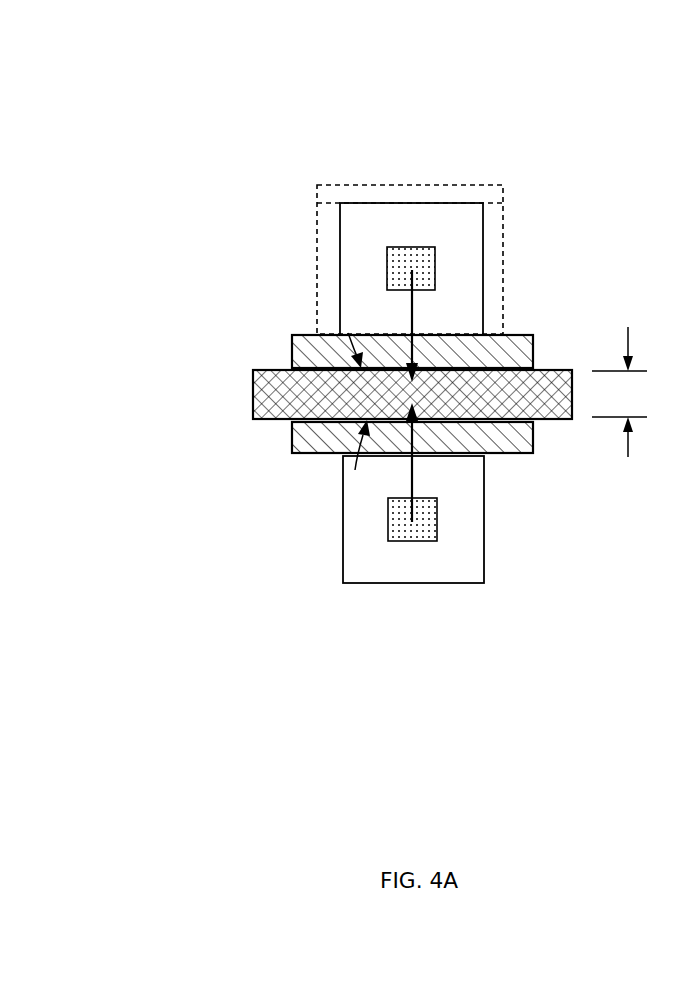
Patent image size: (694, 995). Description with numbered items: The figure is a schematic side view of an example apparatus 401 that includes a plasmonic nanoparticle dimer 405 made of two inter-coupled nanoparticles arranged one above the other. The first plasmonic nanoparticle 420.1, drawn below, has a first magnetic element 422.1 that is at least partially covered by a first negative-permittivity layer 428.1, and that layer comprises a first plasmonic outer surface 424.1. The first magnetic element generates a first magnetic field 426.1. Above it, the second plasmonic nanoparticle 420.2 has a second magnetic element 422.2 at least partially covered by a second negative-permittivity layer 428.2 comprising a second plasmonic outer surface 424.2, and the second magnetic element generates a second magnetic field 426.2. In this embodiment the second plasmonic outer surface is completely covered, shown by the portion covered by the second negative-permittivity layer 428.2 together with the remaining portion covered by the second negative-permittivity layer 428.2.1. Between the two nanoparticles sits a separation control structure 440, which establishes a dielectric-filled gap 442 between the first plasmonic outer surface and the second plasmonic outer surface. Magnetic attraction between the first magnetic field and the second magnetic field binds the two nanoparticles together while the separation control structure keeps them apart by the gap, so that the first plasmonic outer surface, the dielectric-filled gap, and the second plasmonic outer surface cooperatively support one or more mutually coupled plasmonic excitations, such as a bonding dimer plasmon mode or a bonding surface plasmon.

The apparatus 401 is at (200, 55).
The plasmonic nanoparticle dimer 405 is at (210, 145).
The second plasmonic nanoparticle 420.2 is at (422, 203).
The remaining portion of second negative-permittivity layer 428.2.1 is at (503, 255).
The second magnetic element 422.2 is at (435, 267).
The second plasmonic outer surface 424.2 is at (348, 333).
The second magnetic field 426.2 is at (412, 312).
The second negative-permittivity layer 428.2 is at (292, 352).
The separation control structure 440 is at (253, 393).
The dielectric-filled gap 442 is at (623, 409).
The first negative-permittivity layer 428.1 is at (295, 432).
The first magnetic field 426.1 is at (413, 472).
The first magnetic element 422.1 is at (437, 515).
The first plasmonic outer surface 424.1 is at (355, 470).
The first plasmonic nanoparticle 420.1 is at (415, 583).